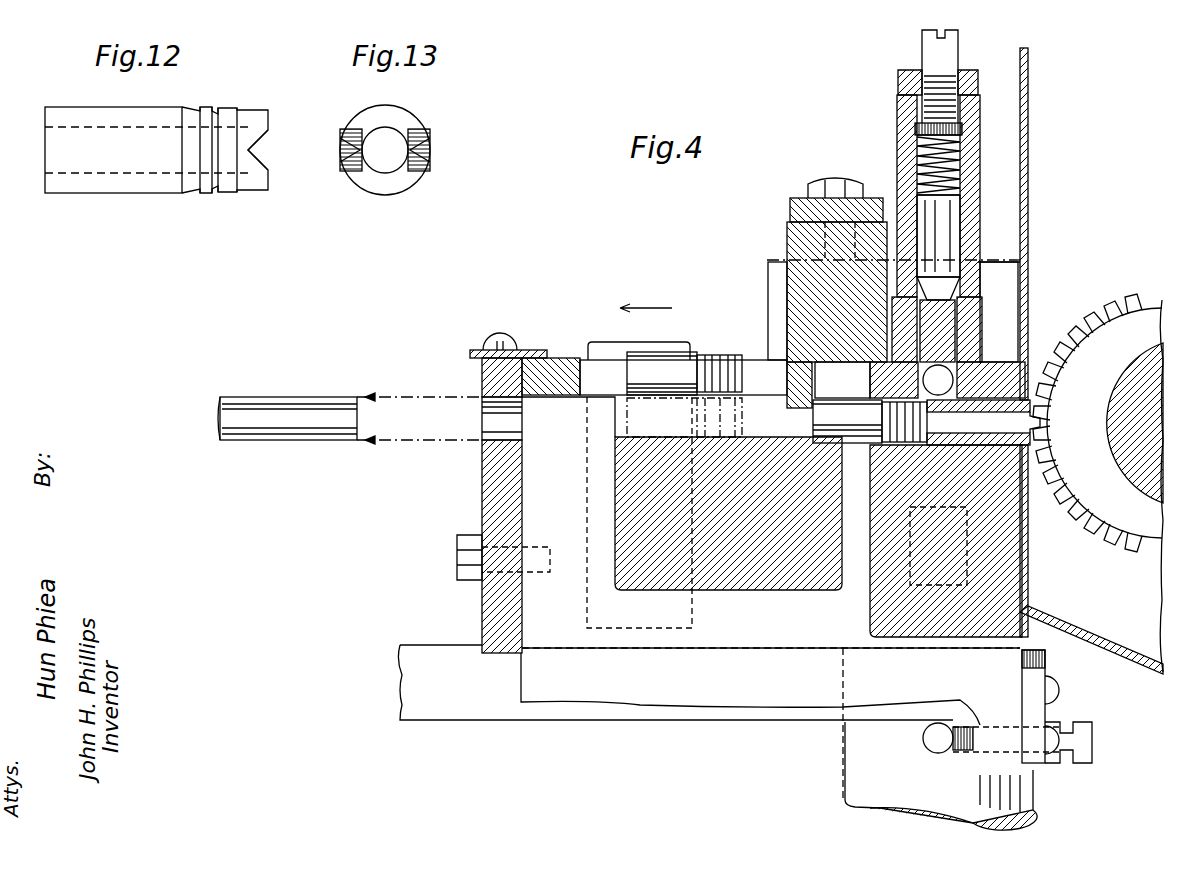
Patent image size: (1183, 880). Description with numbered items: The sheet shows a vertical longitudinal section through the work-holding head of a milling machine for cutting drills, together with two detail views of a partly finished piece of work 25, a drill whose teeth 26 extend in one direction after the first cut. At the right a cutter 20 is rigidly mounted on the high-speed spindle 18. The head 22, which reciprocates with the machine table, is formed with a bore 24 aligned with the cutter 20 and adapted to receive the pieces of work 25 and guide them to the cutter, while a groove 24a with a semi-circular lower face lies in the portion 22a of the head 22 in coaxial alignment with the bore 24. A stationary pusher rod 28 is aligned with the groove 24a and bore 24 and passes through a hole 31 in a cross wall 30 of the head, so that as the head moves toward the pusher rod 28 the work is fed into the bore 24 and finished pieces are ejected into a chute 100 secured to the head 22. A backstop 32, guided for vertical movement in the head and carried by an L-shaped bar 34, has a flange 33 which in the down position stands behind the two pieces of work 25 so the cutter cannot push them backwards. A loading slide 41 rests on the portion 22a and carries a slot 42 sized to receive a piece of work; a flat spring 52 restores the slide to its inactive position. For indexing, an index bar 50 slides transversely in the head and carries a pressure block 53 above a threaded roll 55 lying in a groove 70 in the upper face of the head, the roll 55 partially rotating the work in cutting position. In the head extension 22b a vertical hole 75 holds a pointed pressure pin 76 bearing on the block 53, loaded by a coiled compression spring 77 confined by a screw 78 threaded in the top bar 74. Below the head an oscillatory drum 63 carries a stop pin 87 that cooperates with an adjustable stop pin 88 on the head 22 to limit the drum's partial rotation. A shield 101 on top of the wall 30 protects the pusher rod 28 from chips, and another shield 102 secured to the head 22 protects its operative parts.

In FIG. 4, the spindle 18 is at (1145, 360).
In FIG. 4, the milling machine cutter 20 is at (1075, 315).
In FIG. 4, the head 22 is at (882, 375).
In FIG. 4, the portion of the head 22a is at (712, 590).
In FIG. 4, the head extension 22b is at (975, 180).
In FIG. 4, the bore 24 is at (975, 445).
In FIG. 4, the groove 24a is at (692, 440).
In FIG. 12, the piece of work 25 is at (170, 193).
In FIG. 13, the piece of work 25 is at (385, 195).
In FIG. 4, the piece of work 25 is at (705, 360).
In FIG. 12, the teeth 26 is at (268, 148).
In FIG. 13, the teeth 26 is at (340, 152).
In FIG. 4, the pusher rod 28 is at (318, 397).
In FIG. 4, the cross wall 30 is at (482, 489).
In FIG. 4, the hole 31 is at (482, 417).
In FIG. 4, the backstop 32 is at (790, 240).
In FIG. 4, the flange 33 is at (790, 335).
In FIG. 4, the L-shaped bar 34 is at (790, 208).
In FIG. 4, the loading slide 41 is at (555, 365).
In FIG. 4, the slot 42 is at (760, 372).
In FIG. 4, the index bar 50 is at (980, 315).
In FIG. 4, the flat spring 52 is at (592, 352).
In FIG. 4, the pressure block 53 is at (955, 300).
In FIG. 4, the threaded roll 55 is at (944, 372).
In FIG. 4, the oscillatory drum 63 is at (845, 748).
In FIG. 4, the groove 70 is at (985, 368).
In FIG. 4, the top bar 74 is at (965, 70).
In FIG. 4, the vertical hole 75 is at (915, 128).
In FIG. 4, the pressure pin 76 is at (958, 205).
In FIG. 4, the coiled compression spring 77 is at (915, 150).
In FIG. 4, the screw 78 is at (920, 38).
In FIG. 4, the stop pin 87 is at (924, 735).
In FIG. 4, the adjustable stop pin 88 is at (1093, 737).
In FIG. 4, the chute 100 is at (1100, 650).
In FIG. 4, the shield 101 is at (478, 352).
In FIG. 4, the shield 102 is at (1028, 85).